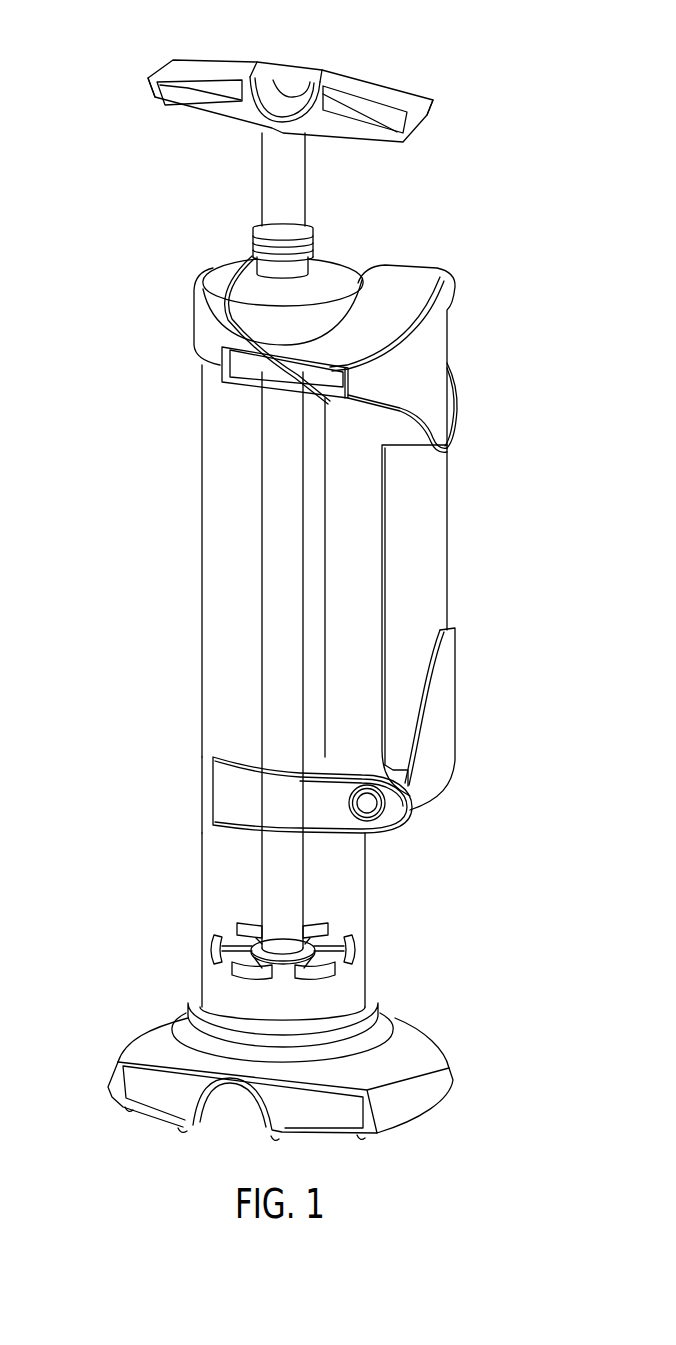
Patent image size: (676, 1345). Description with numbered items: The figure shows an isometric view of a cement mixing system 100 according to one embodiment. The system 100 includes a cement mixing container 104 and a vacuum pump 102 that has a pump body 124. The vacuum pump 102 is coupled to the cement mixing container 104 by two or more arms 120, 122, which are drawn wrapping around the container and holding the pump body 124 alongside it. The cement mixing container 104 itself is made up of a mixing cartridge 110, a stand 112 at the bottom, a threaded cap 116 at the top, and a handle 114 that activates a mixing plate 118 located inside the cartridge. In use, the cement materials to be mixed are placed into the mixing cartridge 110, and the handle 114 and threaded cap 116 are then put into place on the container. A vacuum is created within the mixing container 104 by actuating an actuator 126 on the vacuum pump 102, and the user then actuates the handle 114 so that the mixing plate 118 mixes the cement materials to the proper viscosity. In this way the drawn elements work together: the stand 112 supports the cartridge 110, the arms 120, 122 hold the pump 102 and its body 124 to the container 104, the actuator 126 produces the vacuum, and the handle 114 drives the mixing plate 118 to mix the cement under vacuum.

The cement mixing system 100 is at (117, 34).
The vacuum pump 102 is at (449, 540).
The cement mixing container 104 is at (202, 605).
The mixing cartridge 110 is at (215, 518).
The stand 112 is at (413, 1037).
The handle 114 is at (373, 92).
The threaded cap 116 is at (238, 278).
The mixing plate 118 is at (260, 892).
The arm 120 is at (225, 800).
The arm 122 is at (407, 278).
The pump body 124 is at (365, 585).
The actuator 126 is at (442, 705).